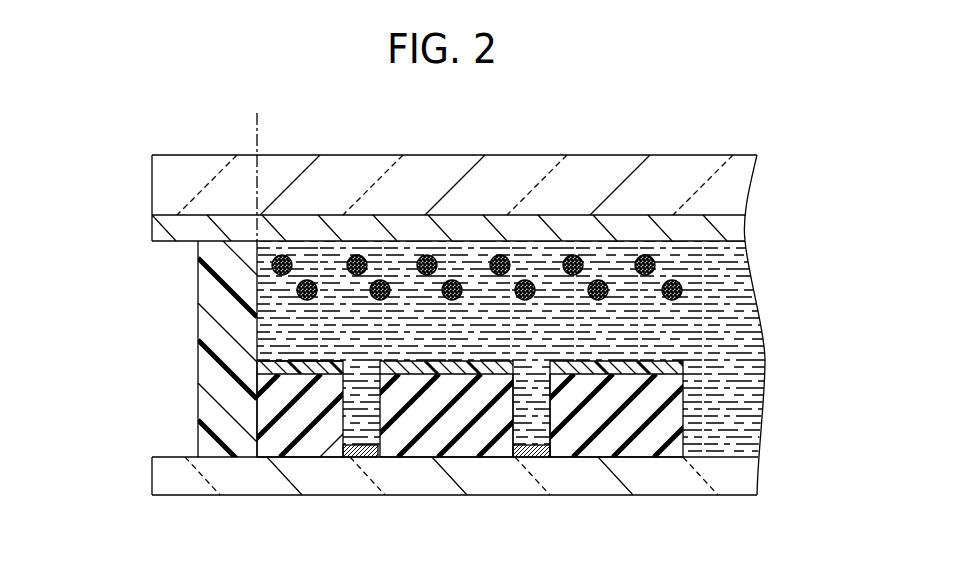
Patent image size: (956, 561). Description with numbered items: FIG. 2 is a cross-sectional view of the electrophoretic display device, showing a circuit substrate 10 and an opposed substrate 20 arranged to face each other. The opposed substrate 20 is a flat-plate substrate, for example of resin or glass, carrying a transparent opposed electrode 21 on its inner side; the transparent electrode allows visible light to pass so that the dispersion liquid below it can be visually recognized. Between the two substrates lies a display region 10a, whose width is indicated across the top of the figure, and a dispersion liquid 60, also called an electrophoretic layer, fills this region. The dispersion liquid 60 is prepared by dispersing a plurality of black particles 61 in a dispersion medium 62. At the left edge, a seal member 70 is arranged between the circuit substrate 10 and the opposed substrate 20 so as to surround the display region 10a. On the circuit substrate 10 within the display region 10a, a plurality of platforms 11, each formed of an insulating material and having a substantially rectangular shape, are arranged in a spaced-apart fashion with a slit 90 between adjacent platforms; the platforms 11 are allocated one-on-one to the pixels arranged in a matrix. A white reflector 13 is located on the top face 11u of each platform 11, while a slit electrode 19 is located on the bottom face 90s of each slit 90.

The circuit substrate 10 is at (162, 476).
The display region 10a is at (761, 143).
The platform 11 is at (265, 415).
The top face 11u is at (302, 362).
The white reflector 13 is at (273, 370).
The slit electrode 19 is at (352, 457).
The opposed substrate 20 is at (158, 177).
The opposed electrode 21 is at (153, 228).
The dispersion liquid 60 is at (808, 278).
The black particles 61 is at (683, 288).
The dispersion medium 62 is at (740, 318).
The seal member 70 is at (205, 286).
The slit 90 is at (543, 408).
The bottom face 90s is at (550, 457).